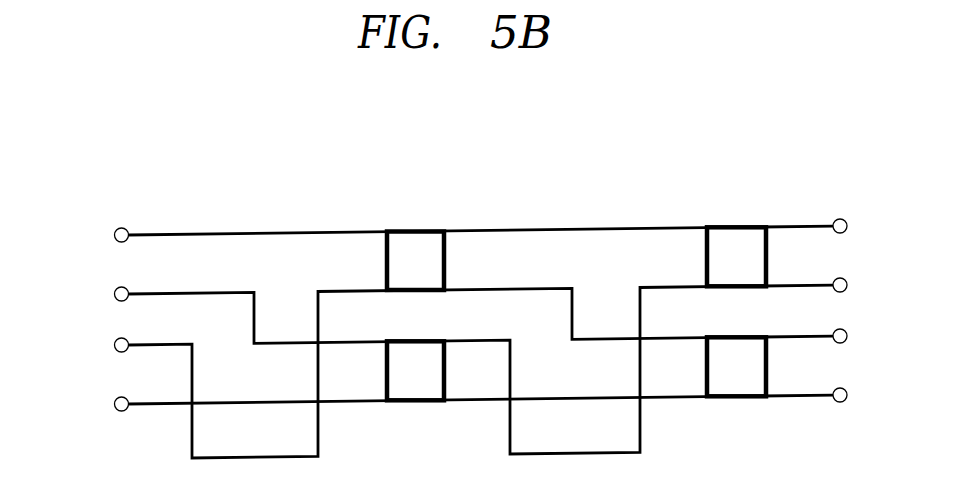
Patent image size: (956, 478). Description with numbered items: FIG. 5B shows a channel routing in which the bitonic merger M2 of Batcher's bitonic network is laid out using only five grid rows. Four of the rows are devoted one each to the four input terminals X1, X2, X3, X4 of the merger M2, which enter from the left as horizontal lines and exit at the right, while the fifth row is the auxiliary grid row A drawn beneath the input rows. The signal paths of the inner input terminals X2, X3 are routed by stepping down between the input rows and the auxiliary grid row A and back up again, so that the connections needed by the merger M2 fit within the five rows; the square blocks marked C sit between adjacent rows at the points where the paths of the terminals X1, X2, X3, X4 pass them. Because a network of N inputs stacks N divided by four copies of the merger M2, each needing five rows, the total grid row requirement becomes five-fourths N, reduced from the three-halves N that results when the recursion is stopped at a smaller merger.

The merger M2 is at (240, 185).
The input terminal X1 is at (463, 226).
The input terminal X2 is at (463, 362).
The input terminal X3 is at (463, 373).
The input terminal X4 is at (464, 404).
The auxiliary grid row A is at (152, 458).
The crossover element C is at (425, 272).